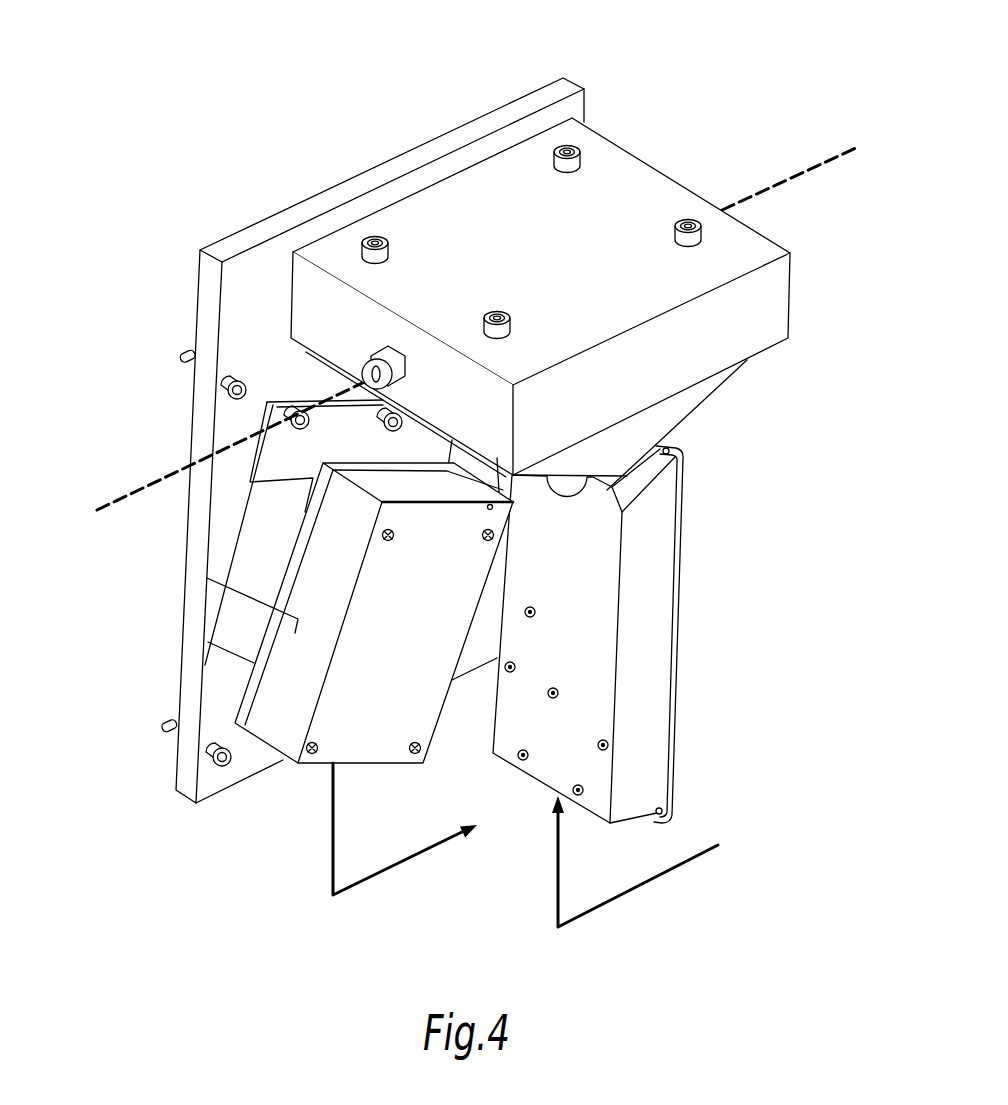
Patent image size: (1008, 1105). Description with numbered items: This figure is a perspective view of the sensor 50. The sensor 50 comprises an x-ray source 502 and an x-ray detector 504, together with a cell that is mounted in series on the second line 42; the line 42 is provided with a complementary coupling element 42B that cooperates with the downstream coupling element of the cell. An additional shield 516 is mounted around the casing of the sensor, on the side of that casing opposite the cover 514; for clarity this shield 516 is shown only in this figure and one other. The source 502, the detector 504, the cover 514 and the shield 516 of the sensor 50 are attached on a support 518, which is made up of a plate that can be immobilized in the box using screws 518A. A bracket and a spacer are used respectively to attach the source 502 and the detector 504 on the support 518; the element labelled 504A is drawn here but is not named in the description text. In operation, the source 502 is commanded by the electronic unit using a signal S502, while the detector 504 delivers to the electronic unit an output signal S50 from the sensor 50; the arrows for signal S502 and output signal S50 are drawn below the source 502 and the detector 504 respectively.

The sensor 50 is at (372, 130).
The support 518 is at (247, 280).
The screws 518A is at (180, 356).
The sensor bracket 504A is at (268, 569).
The second line 42 is at (790, 178).
The complementary coupling element 42B is at (383, 350).
The additional shield 516 is at (540, 307).
The cover 514 is at (665, 414).
The x-ray source 502 is at (588, 634).
The x-ray detector 504 is at (374, 613).
The output signal S50 is at (405, 829).
The signal S502 is at (611, 861).